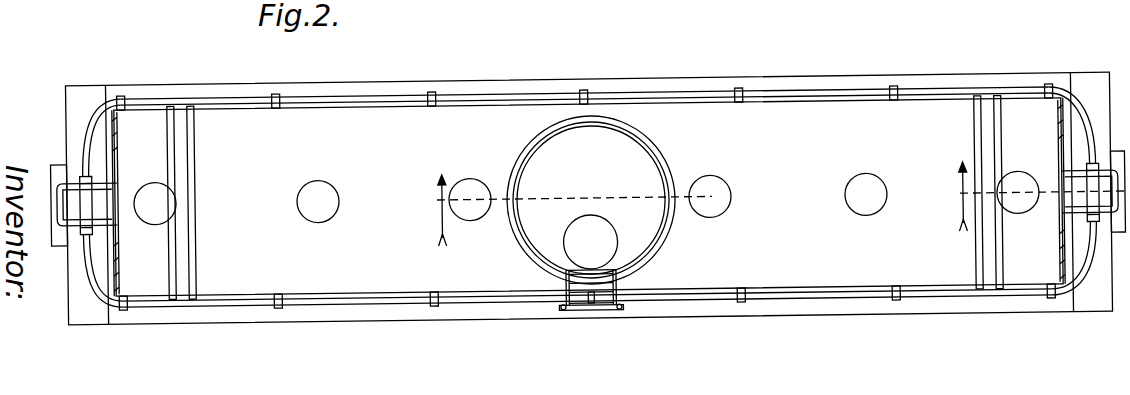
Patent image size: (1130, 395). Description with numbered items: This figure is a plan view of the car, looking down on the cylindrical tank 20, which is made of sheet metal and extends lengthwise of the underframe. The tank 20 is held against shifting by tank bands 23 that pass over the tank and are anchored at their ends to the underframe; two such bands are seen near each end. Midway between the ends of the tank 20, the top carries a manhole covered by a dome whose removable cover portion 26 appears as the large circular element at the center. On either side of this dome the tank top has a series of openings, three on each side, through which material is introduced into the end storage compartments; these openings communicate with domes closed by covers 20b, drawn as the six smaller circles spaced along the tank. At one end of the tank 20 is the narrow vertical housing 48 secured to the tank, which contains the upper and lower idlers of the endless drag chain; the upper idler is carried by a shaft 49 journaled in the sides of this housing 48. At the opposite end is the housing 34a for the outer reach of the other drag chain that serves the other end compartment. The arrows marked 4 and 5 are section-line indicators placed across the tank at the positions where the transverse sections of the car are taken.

The cylindrical tank 20 is at (346, 288).
The covers 20b is at (167, 197).
The tank bands 23 is at (193, 101).
The removable cover portion 26 is at (572, 137).
The housing for the outer reach of the chain 34a is at (75, 203).
The narrow vertical housing 48 is at (1105, 195).
The shaft 49 is at (1087, 162).
The section line 4 is at (952, 196).
The section line 5 is at (430, 210).